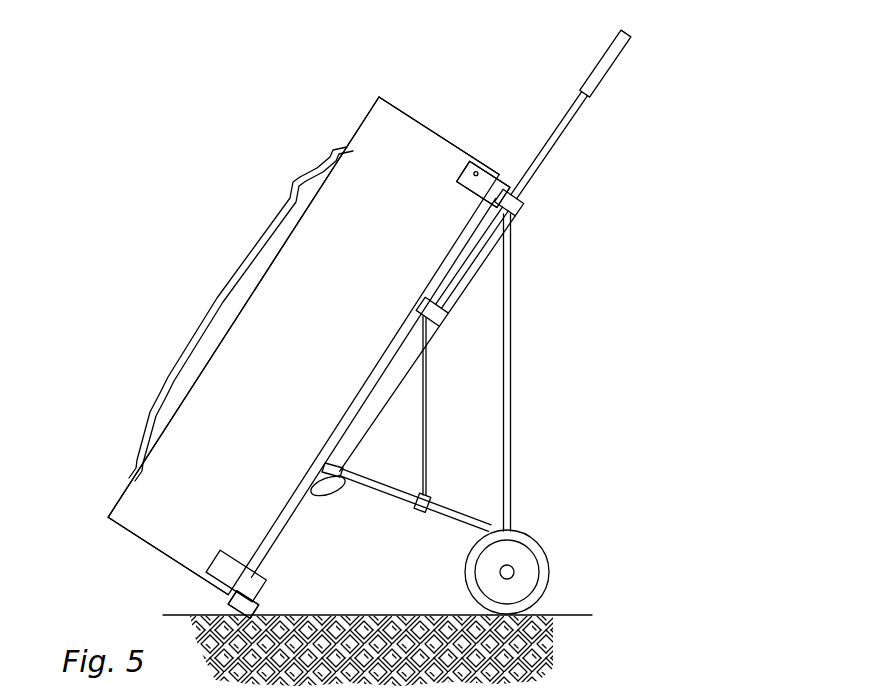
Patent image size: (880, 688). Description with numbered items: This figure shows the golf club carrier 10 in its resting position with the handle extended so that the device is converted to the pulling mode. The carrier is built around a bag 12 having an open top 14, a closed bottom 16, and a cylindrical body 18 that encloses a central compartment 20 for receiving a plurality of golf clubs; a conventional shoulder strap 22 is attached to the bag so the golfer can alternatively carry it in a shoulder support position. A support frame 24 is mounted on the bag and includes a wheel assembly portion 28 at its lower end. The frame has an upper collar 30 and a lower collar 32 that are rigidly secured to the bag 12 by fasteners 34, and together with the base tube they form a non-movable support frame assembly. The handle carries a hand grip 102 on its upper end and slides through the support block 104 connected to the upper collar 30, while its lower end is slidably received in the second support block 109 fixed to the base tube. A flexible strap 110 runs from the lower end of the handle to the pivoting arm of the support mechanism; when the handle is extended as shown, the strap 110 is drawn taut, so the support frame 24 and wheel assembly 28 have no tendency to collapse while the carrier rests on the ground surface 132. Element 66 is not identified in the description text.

The carrier 10 is at (498, 78).
The bag 12 is at (98, 478).
The open top 14 is at (435, 132).
The closed bottom 16 is at (108, 517).
The cylindrical body 18 is at (217, 387).
The central compartment 20 is at (405, 160).
The shoulder strap 22 is at (220, 294).
The support frame 24 is at (567, 319).
The wheel assembly portion 28 is at (580, 490).
The upper collar 30 is at (500, 186).
The lower collar 32 is at (229, 598).
The fasteners 34 is at (470, 168).
The foot 66 is at (256, 606).
The hand grip 102 is at (630, 38).
The support block 104 is at (511, 209).
The second support block 109 is at (422, 305).
The flexible strap 110 is at (428, 402).
The ground surface 132 is at (583, 613).